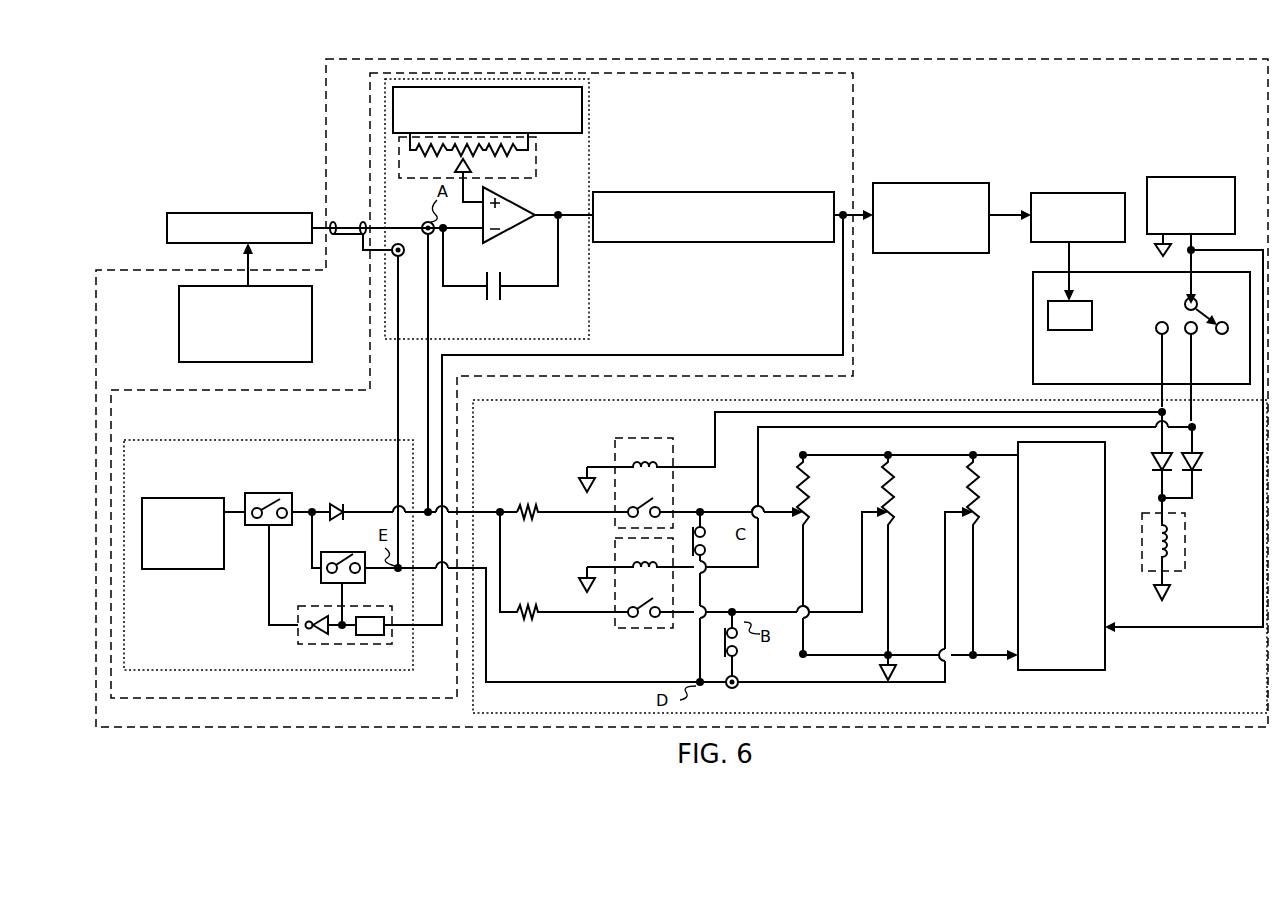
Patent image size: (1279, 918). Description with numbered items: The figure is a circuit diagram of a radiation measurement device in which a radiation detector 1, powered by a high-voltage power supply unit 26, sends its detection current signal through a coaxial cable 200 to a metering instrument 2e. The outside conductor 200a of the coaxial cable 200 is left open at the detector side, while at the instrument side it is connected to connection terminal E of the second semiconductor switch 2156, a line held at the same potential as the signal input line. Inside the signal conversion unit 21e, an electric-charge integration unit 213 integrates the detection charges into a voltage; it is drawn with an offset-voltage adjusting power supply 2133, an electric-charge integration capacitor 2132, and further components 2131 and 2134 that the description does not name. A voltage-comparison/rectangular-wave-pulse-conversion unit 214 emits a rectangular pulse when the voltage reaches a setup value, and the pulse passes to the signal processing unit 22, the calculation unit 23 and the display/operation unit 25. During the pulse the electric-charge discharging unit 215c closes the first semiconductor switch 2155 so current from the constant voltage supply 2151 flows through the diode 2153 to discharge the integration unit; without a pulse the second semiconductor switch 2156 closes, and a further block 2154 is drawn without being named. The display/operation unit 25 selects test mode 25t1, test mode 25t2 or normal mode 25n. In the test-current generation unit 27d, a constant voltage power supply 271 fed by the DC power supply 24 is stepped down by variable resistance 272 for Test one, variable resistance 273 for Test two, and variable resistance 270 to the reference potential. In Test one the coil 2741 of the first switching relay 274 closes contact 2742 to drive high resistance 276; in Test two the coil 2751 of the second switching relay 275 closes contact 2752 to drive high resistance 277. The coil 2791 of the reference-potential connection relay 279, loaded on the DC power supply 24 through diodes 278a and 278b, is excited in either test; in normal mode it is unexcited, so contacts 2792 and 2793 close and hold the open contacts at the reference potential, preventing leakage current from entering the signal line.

The radiation detector 1 is at (272, 213).
The coaxial cable 200 is at (353, 213).
The outside conductor 200a is at (350, 237).
The high-voltage power supply unit 26 is at (313, 333).
The metering instrument 2e is at (1203, 62).
The signal conversion unit 21e is at (852, 152).
The electric-charge integration unit 213 is at (590, 104).
The offset-voltage adjusting power supply 2133 is at (583, 126).
The offset adjusting resistor network 2134 is at (536, 165).
The operational amplifier 2131 is at (510, 233).
The electric-charge integration capacitor 2132 is at (500, 296).
The voltage-comparison/rectangular-wave-pulse-conversion unit 214 is at (740, 192).
The signal processing unit 22 is at (938, 182).
The calculation unit 23 is at (1058, 192).
The DC power supply 24 is at (1198, 176).
The display/operation unit 25 is at (1032, 319).
The test mode 25t1 is at (1184, 322).
The test mode 25t2 is at (1158, 334).
The normal mode 25n is at (1223, 340).
The electric-charge discharging unit 215c is at (211, 440).
The constant voltage supply 2151 is at (184, 498).
The first semiconductor switch 2155 is at (262, 493).
The diode 2153 is at (338, 504).
The second semiconductor switch 2156 is at (322, 578).
The inverter and resistor circuit 2154 is at (298, 631).
The test-current generation unit 27d is at (474, 700).
The high resistance 277 is at (565, 491).
The second switching relay 275 is at (618, 440).
The coil 2751 is at (649, 456).
The contact 2752 is at (660, 504).
The contact 2793 is at (712, 553).
The first switching relay 274 is at (614, 628).
The coil 2741 is at (638, 563).
The contact 2742 is at (652, 640).
The high resistance 276 is at (546, 601).
The contact 2792 is at (740, 657).
The variable resistance 273 is at (806, 512).
The variable resistance 272 is at (892, 512).
The variable resistance 270 is at (978, 512).
The constant voltage power supply 271 is at (1106, 652).
The diode 278b is at (1160, 463).
The diode 278a is at (1196, 465).
The reference-potential connection relay 279 is at (1187, 528).
The coil 2791 is at (1180, 550).